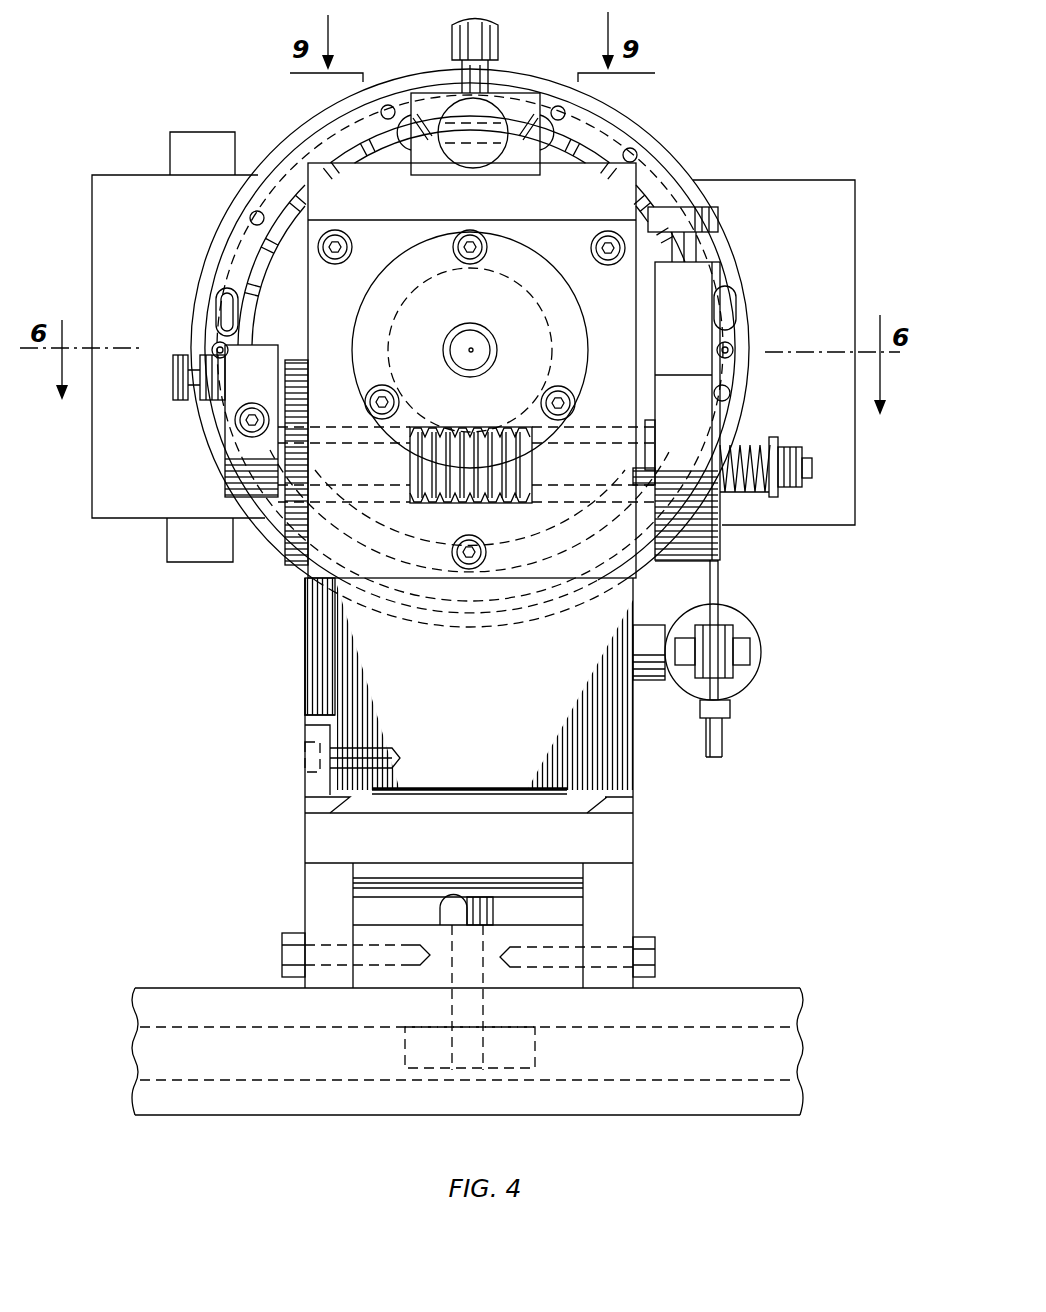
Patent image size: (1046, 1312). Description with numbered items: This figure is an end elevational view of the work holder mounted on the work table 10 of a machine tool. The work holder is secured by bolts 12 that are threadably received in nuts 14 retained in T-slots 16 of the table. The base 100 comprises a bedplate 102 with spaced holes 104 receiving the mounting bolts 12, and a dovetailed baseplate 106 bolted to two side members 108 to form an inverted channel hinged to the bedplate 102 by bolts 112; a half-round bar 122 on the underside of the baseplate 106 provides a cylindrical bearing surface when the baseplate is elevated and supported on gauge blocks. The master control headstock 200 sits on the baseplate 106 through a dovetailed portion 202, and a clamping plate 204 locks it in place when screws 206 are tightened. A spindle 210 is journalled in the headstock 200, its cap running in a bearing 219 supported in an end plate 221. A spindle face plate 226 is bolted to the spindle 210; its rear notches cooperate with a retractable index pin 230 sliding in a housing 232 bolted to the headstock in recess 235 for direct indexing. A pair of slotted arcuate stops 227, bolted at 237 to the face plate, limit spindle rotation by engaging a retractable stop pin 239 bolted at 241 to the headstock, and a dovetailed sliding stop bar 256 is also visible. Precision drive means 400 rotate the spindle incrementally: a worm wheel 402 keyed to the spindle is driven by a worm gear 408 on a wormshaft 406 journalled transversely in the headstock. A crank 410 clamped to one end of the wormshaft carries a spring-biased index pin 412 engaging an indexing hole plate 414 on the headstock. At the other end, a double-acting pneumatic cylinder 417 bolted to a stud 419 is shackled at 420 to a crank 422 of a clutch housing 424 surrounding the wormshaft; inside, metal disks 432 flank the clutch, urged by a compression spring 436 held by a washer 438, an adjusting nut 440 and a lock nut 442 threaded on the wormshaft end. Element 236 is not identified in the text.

The work table 10 is at (253, 1119).
The bolts 12 is at (497, 912).
The nuts 14 is at (405, 1045).
The T-slots 16 is at (755, 1063).
The base 100 is at (305, 843).
The bedplate 102 is at (427, 975).
The spaced holes 104 is at (475, 967).
The dovetailed baseplate 106 is at (623, 845).
The side members 108 is at (620, 905).
The bolts 112 is at (656, 960).
The half-round bar 122 is at (528, 872).
The master control headstock 200 is at (640, 182).
The dovetailed portion 202 is at (600, 805).
The clamping plate 204 is at (305, 797).
The screws 206 is at (305, 752).
The spindle 210 is at (472, 350).
The bearing 219 is at (462, 332).
The end plate 221 is at (522, 236).
The spindle face plate 226 is at (640, 125).
The slotted arcuate stops 227 is at (712, 250).
The retractable index pin 230 is at (437, 97).
The housing 232 is at (447, 113).
The recess 235 is at (530, 175).
The side box 236 is at (120, 175).
The bolts 237 is at (733, 345).
The retractable stop pin 239 is at (320, 143).
The bolt 241 is at (290, 148).
The dovetailed sliding stop bar 256 is at (178, 135).
The precision drive means 400 is at (728, 538).
The worm wheel 402 is at (540, 325).
The wormshaft 406 is at (597, 483).
The worm gear 408 is at (470, 500).
The crank 410 is at (227, 450).
The index pin 412 is at (178, 400).
The indexing hole plate 414 is at (288, 558).
The double-acting pneumatic cylinder 417 is at (747, 675).
The stud 419 is at (641, 678).
The shackle 420 is at (752, 648).
The crank 422 is at (716, 587).
The clutch housing 424 is at (697, 442).
The metal disk 432 is at (648, 445).
The compression spring 436 is at (755, 500).
The washer 438 is at (772, 490).
The adjusting nut 440 is at (779, 443).
The lock nut 442 is at (812, 478).